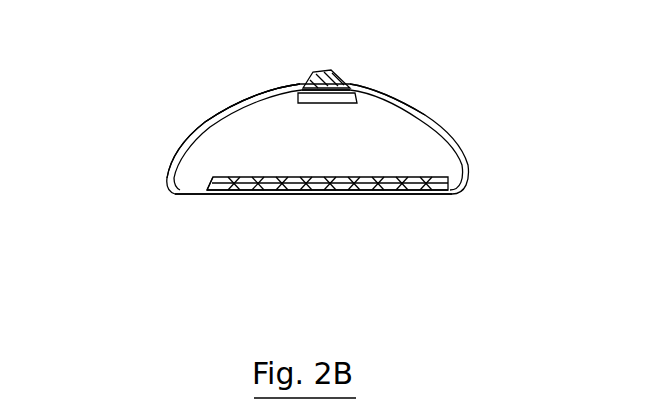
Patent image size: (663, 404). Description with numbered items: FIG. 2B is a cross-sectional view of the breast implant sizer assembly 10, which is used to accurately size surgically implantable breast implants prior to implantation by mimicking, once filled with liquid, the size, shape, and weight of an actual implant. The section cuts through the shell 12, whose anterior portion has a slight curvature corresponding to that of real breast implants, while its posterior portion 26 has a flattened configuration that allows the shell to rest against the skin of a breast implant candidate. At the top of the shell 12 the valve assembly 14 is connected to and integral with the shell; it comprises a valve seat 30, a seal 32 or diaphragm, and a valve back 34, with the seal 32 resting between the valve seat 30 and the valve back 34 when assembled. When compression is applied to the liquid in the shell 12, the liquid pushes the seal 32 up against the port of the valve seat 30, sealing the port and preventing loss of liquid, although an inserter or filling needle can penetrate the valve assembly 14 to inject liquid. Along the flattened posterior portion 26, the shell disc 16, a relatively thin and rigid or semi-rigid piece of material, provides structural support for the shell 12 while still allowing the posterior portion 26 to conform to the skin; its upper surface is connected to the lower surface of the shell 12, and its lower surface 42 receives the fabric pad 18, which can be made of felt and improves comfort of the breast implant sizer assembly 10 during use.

The breast implant sizer assembly 10 is at (116, 50).
The shell 12 is at (459, 115).
The valve assembly 14 is at (328, 114).
The shell disc 16 is at (272, 166).
The fabric pad 18 is at (364, 204).
The posterior portion 26 is at (444, 234).
The valve seat 30 is at (436, 65).
The seal 32 is at (348, 56).
The valve back 34 is at (250, 91).
The lower surface 42 is at (243, 197).